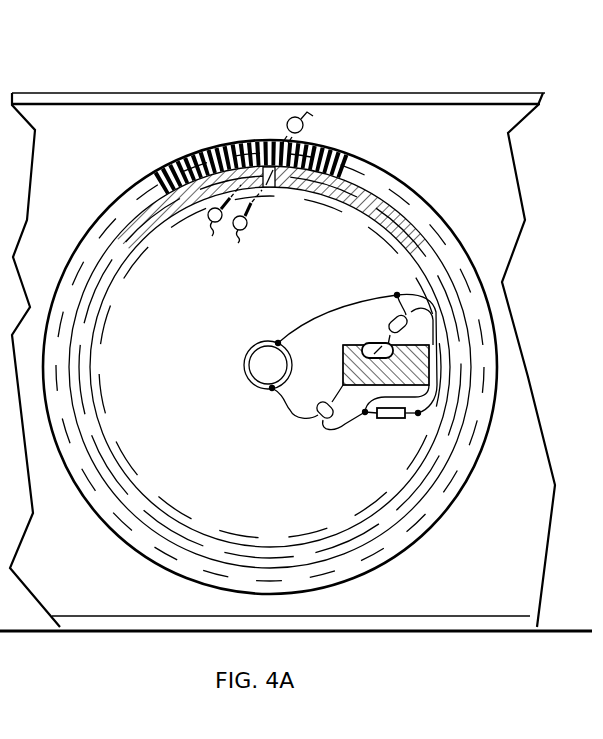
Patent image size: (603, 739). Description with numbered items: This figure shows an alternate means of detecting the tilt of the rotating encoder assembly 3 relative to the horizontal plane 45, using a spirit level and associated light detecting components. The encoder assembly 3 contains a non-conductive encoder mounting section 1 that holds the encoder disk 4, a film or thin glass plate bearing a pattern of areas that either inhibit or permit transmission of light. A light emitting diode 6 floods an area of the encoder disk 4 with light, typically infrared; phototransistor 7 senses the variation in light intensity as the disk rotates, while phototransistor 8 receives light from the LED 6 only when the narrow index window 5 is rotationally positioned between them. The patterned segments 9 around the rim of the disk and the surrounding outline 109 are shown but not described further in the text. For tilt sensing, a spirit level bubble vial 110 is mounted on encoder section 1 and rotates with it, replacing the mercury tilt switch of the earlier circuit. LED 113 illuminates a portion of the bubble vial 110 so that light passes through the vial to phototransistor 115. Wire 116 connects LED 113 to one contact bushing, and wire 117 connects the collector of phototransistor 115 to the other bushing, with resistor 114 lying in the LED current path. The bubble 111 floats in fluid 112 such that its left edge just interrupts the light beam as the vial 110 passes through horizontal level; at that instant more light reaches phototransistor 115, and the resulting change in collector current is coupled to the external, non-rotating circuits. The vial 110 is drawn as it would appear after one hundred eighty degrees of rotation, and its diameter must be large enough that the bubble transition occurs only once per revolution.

The encoder mounting section 1 is at (385, 253).
The encoder assembly 3 is at (397, 180).
The encoder disk 4 is at (348, 168).
The index window 5 is at (272, 187).
The light emitting diode 6 is at (287, 122).
The phototransistor 7 is at (208, 220).
The phototransistor 8 is at (247, 228).
The pole segments 9 is at (215, 150).
The horizontal plane 45 is at (432, 634).
The housing 109 is at (493, 160).
The spirit level bubble vial 110 is at (429, 354).
The bubble 111 is at (362, 349).
The fluid 112 is at (429, 372).
The LED 113 is at (322, 403).
The resistor 114 is at (387, 421).
The phototransistor 115 is at (388, 323).
The wire 116 is at (270, 390).
The wire 117 is at (325, 315).